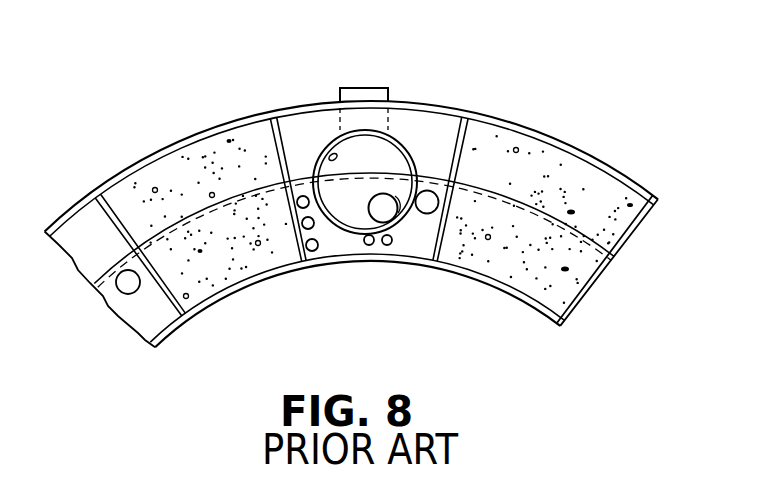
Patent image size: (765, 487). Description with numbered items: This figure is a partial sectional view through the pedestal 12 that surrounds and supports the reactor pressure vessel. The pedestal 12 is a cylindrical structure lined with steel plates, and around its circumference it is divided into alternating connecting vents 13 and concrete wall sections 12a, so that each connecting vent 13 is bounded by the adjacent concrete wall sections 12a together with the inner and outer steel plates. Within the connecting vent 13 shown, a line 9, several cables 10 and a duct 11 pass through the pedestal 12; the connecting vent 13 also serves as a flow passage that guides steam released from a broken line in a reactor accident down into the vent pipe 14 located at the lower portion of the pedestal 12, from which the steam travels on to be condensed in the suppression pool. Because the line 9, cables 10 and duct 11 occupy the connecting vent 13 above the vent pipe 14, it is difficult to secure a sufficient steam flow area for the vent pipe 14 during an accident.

The line 9 is at (432, 190).
The cable 10 is at (316, 249).
The duct 11 is at (399, 216).
The pedestal 12 is at (437, 106).
The concrete wall section 12a is at (478, 149).
The connecting vent 13 is at (302, 187).
The vent pipe 14 is at (331, 154).